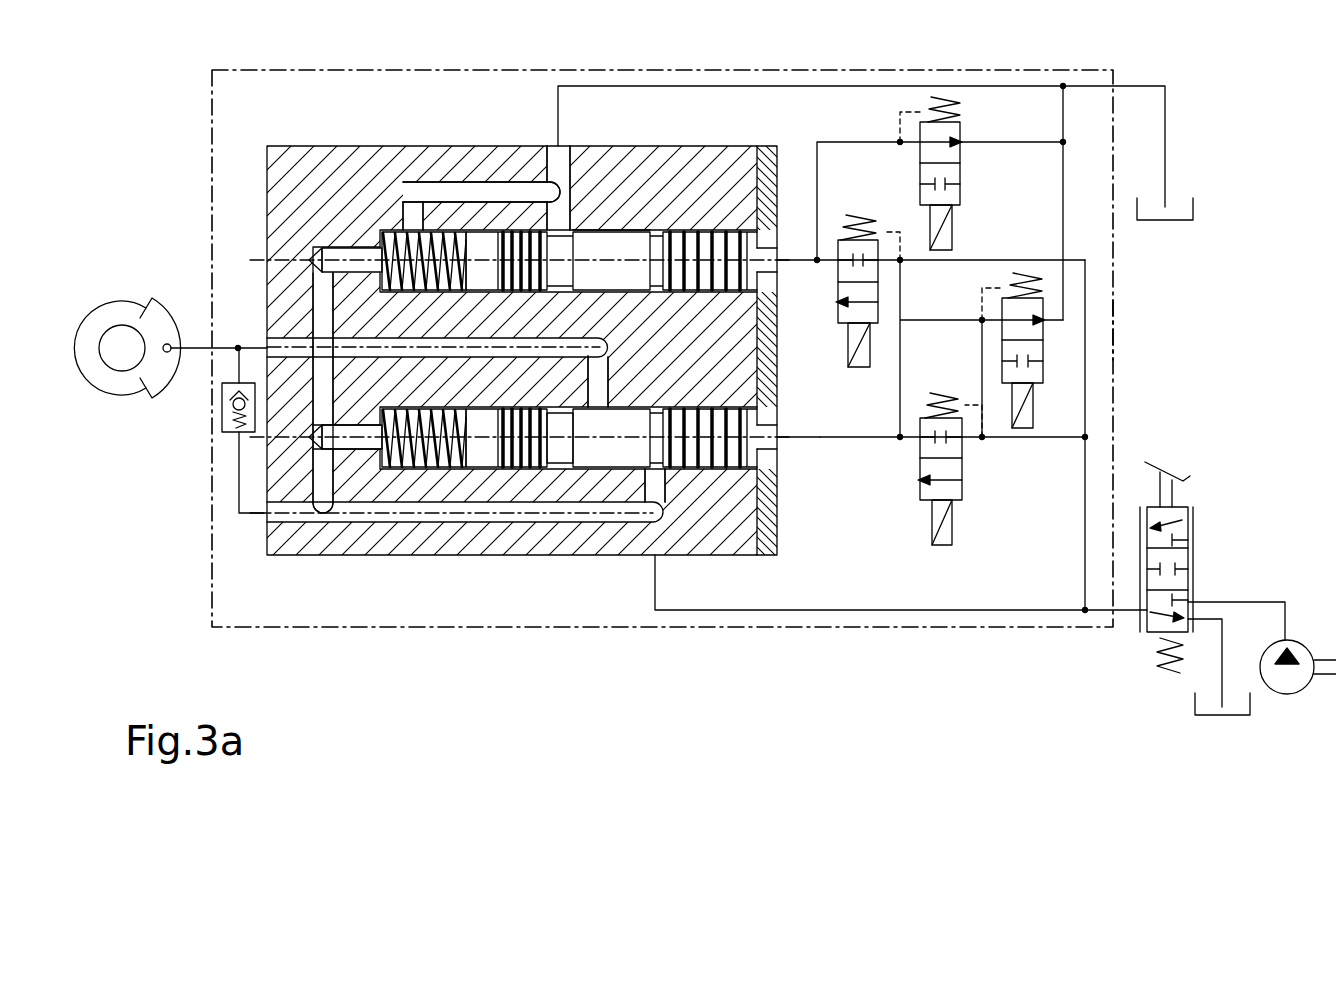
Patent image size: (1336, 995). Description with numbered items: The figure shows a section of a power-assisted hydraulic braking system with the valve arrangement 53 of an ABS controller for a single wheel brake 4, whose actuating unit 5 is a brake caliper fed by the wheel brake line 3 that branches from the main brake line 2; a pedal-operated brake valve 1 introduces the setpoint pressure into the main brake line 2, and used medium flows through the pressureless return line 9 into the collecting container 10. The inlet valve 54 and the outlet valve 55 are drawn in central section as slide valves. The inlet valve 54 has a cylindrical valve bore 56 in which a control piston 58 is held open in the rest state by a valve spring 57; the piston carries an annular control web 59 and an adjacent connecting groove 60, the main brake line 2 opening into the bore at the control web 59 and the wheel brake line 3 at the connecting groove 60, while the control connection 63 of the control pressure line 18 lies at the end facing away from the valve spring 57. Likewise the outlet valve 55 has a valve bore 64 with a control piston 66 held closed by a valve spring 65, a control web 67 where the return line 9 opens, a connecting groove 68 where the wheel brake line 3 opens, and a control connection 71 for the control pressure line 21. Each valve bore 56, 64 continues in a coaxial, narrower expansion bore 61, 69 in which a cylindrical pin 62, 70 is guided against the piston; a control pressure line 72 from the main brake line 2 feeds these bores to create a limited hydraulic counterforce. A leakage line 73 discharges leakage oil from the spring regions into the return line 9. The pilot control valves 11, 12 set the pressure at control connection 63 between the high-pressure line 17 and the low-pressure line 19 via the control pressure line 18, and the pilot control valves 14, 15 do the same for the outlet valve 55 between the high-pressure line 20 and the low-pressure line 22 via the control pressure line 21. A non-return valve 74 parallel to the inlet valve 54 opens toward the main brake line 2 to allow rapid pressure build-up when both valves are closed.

The brake valve 1 is at (1218, 570).
The main brake line 2 is at (880, 625).
The wheel brake line 3 is at (198, 355).
The wheel brake 4 is at (93, 416).
The actuating unit 5 is at (150, 398).
The return line 9 is at (1165, 143).
The collecting container 10 is at (1193, 210).
The first pilot control valve of the inlet valve 11 is at (962, 472).
The second pilot control valve of the inlet valve 12 is at (1043, 355).
The first pilot control valve of the outlet valve 14 is at (880, 275).
The second pilot control valve of the outlet valve 15 is at (960, 148).
The high-pressure line 17 is at (1067, 440).
The control pressure line 18 is at (857, 440).
The low-pressure line 19 is at (1065, 302).
The high-pressure line 20 is at (988, 260).
The control pressure line 21 is at (830, 245).
The low-pressure line 22 is at (1010, 142).
The valve arrangement 53 is at (1114, 328).
The inlet valve 54 is at (483, 482).
The outlet valve 55 is at (483, 218).
The valve bore 56 is at (592, 463).
The valve spring 57 is at (410, 470).
The control piston 58 is at (712, 455).
The control web 59 is at (655, 455).
The connecting groove 60 is at (613, 453).
The expansion bore 61 is at (320, 490).
The cylindrical pin 62 is at (367, 447).
The control connection 63 is at (780, 427).
The valve bore 64 is at (643, 230).
The valve spring 65 is at (387, 227).
The control piston 66 is at (712, 245).
The control web 67 is at (570, 245).
The connecting groove 68 is at (605, 253).
The expansion bore 69 is at (318, 250).
The cylindrical pin 70 is at (357, 257).
The control connection 71 is at (783, 260).
The control pressure line 72 is at (325, 310).
The leakage line 73 is at (447, 195).
The non-return valve 74 is at (228, 433).